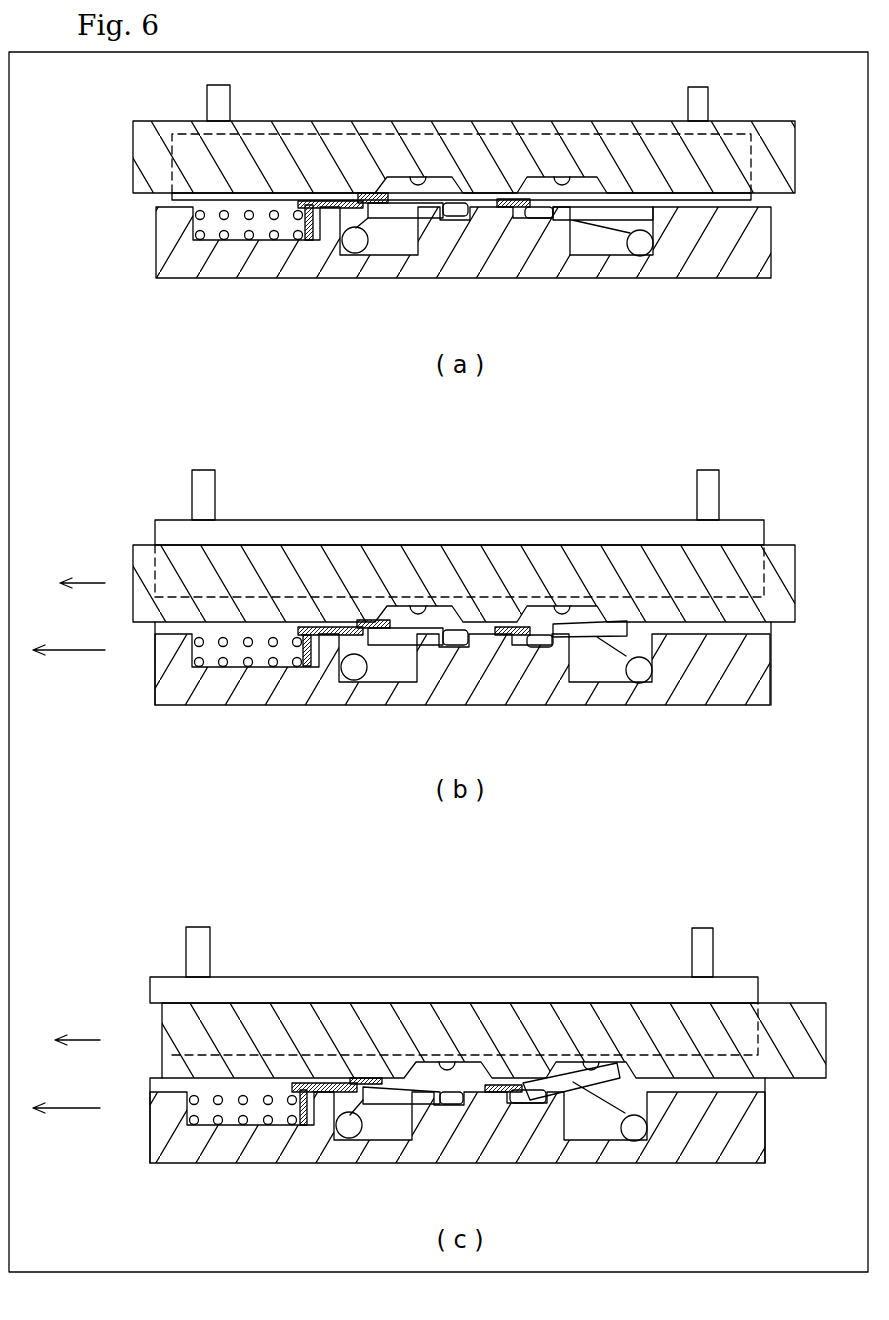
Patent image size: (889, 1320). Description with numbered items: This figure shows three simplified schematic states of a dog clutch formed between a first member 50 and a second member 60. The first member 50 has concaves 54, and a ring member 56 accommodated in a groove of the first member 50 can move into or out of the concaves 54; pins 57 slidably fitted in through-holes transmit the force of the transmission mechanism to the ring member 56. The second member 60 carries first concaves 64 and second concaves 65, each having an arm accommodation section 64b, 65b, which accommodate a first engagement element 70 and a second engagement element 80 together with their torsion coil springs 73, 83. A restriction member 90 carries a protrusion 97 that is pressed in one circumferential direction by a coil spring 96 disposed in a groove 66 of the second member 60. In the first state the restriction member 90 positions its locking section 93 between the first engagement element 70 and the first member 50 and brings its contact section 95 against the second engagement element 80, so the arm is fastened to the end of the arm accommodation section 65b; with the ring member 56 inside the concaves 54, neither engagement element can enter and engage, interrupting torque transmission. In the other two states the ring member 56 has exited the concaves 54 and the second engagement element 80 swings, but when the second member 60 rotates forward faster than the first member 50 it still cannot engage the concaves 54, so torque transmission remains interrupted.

The first member 50 is at (773, 121).
The concaves 54 is at (417, 176).
The ring member 56 is at (447, 130).
The pins 57 is at (231, 97).
The second member 60 is at (773, 247).
The first concaves 64 is at (400, 219).
The arm accommodation section 64b is at (455, 218).
The second concaves 65 is at (578, 222).
The arm accommodation section 65b is at (540, 219).
The groove 66 is at (200, 241).
The first engagement element 70 is at (371, 676).
The spring 73 is at (352, 254).
The second engagement element 80 is at (588, 683).
The spring 83 is at (641, 257).
The restriction member 90 is at (318, 200).
The locking section 93 is at (368, 194).
The contact section 95 is at (515, 198).
The coil spring 96 is at (190, 211).
The protrusion 97 is at (309, 241).